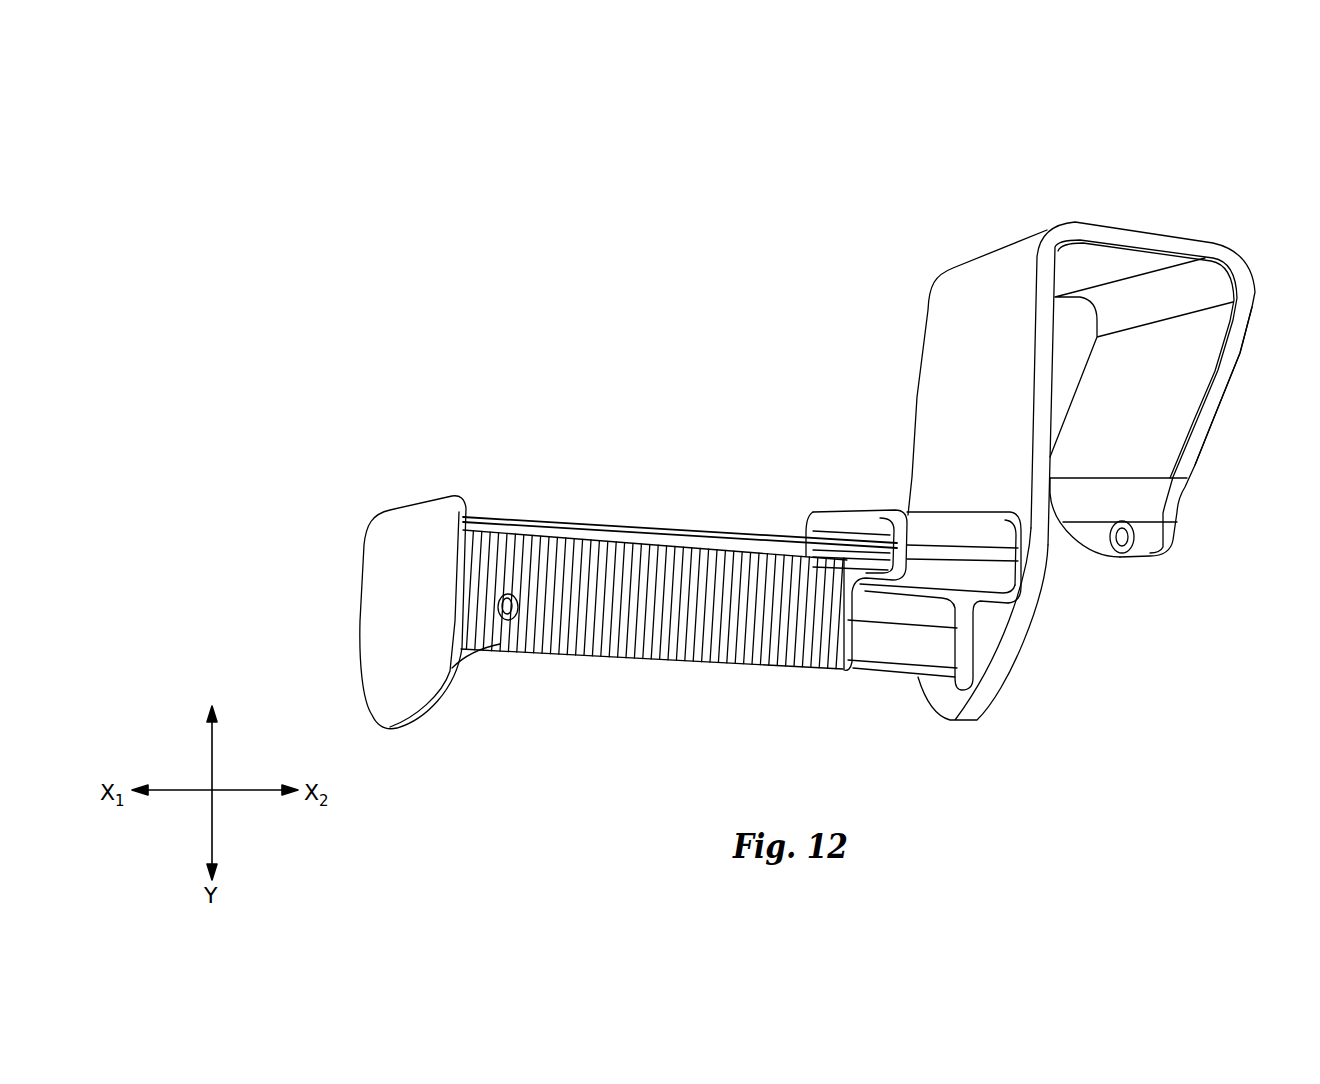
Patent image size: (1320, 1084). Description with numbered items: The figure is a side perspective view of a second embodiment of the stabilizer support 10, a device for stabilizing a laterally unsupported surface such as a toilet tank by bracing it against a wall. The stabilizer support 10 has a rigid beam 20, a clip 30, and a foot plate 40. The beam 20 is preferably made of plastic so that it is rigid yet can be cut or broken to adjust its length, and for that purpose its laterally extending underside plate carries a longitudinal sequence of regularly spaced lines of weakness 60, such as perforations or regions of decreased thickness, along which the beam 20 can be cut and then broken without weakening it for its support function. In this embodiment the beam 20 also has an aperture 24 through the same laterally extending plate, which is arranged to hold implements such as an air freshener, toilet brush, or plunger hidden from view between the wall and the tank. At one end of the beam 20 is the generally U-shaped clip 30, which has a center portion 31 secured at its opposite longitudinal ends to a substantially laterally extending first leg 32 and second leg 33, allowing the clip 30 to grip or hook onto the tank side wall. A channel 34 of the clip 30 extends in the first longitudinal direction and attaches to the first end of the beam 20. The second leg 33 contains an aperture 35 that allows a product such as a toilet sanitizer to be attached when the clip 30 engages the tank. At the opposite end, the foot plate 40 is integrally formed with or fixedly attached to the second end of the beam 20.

The stabilizer support 10 is at (1203, 160).
The beam 20 is at (620, 537).
The aperture 24 is at (505, 624).
The clip 30 is at (998, 263).
The center portion 31 is at (1118, 237).
The first leg 32 is at (965, 332).
The second leg 33 is at (1210, 428).
The channel 34 is at (837, 644).
The aperture 35 is at (1122, 553).
The foot plate 40 is at (383, 553).
The lines of weakness 60 is at (553, 640).